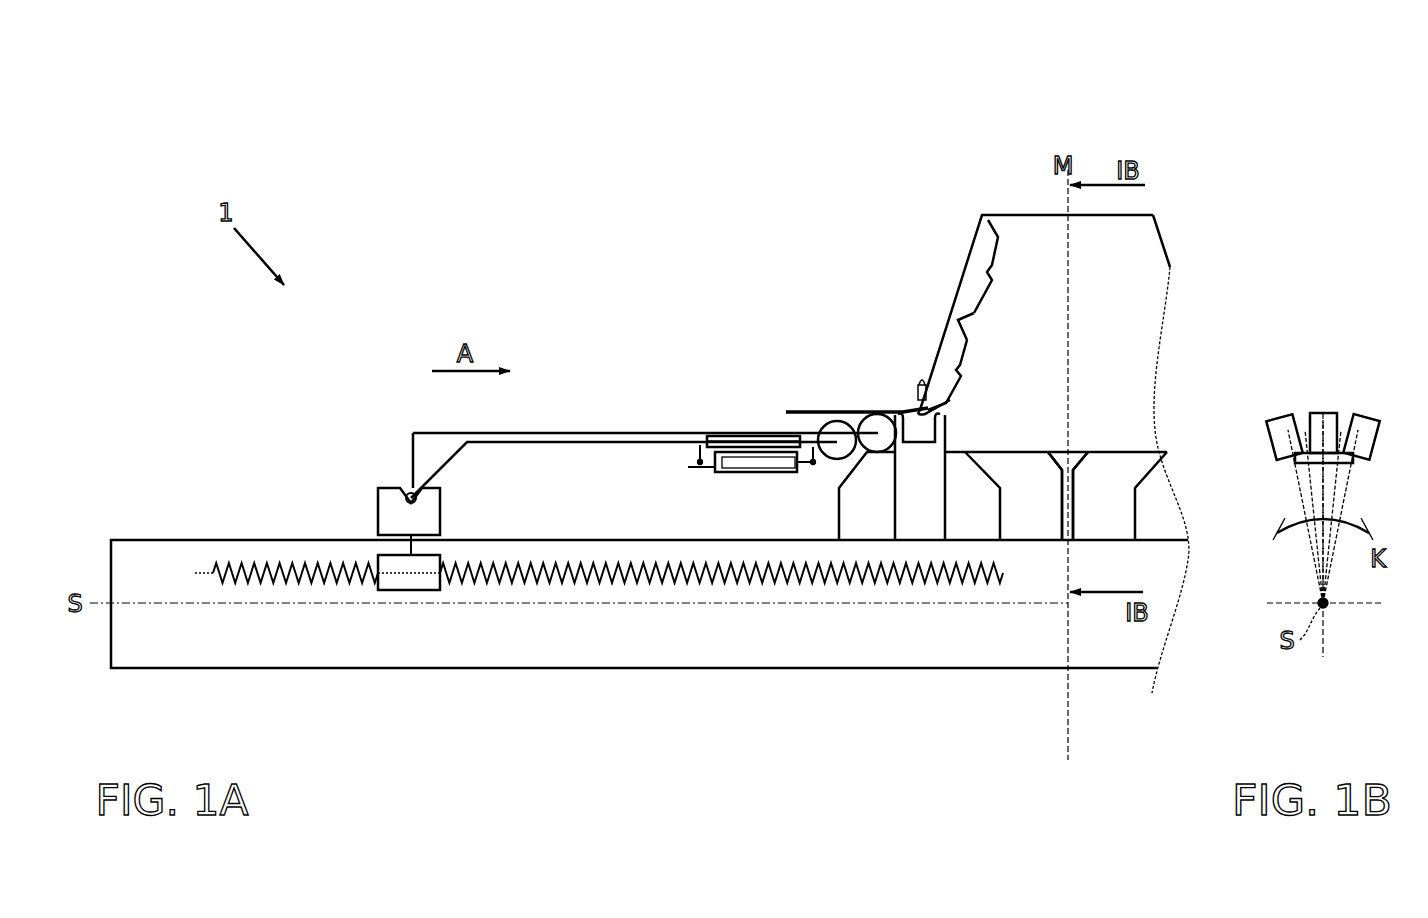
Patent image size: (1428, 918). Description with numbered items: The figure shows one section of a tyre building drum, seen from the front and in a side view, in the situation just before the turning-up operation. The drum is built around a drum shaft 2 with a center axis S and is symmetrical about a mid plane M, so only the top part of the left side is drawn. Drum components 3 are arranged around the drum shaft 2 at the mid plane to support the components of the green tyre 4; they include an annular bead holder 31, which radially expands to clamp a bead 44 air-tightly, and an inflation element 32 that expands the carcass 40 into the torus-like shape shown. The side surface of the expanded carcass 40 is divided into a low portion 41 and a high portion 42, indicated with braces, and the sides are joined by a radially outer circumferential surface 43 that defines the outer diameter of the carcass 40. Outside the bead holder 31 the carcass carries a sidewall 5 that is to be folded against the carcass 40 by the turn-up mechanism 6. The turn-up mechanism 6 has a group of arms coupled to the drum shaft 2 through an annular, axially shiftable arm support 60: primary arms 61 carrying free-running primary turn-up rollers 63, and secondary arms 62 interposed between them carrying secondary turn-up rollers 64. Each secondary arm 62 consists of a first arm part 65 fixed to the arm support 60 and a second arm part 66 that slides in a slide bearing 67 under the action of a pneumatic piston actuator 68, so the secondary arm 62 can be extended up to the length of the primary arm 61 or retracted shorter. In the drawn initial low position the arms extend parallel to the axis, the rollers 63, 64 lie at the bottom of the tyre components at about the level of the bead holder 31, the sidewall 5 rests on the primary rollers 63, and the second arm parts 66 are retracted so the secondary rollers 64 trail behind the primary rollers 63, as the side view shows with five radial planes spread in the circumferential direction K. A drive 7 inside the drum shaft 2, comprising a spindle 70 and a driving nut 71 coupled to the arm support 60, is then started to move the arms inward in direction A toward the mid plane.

In FIG. 1A, the drum shaft 2 is at (320, 645).
In FIG. 1A, the drum components 3 is at (1010, 545).
In FIG. 1A, the green tyre 4 is at (962, 263).
In FIG. 1A, the sidewall 5 is at (830, 410).
In FIG. 1A, the turn-up mechanism 6 is at (375, 505).
In FIG. 1A, the drive 7 is at (618, 560).
In FIG. 1A, the bead holder 31 is at (935, 545).
In FIG. 1A, the inflation element 32 is at (1076, 503).
In FIG. 1A, the carcass 40 is at (968, 340).
In FIG. 1A, the low portion 41 is at (961, 375).
In FIG. 1A, the high portion 42 is at (1000, 266).
In FIG. 1A, the radially outer circumferential surface 43 is at (1153, 215).
In FIG. 1A, the bead 44 is at (918, 384).
In FIG. 1A, the arm support 60 is at (443, 508).
In FIG. 1A, the primary arm 61 is at (533, 432).
In FIG. 1A, the secondary arm 62 is at (609, 445).
In FIG. 1A, the primary turn-up roller 63 is at (893, 410).
In FIG. 1B, the primary turn-up roller 63 is at (1355, 416).
In FIG. 1A, the secondary turn-up roller 64 is at (842, 457).
In FIG. 1B, the secondary turn-up roller 64 is at (1300, 462).
In FIG. 1A, the first arm part 65 is at (655, 432).
In FIG. 1A, the second arm part 66 is at (803, 432).
In FIG. 1A, the slide bearing 67 is at (722, 437).
In FIG. 1A, the pneumatic piston actuator 68 is at (730, 474).
In FIG. 1A, the spindle 70 is at (723, 575).
In FIG. 1A, the driving nut 71 is at (417, 582).